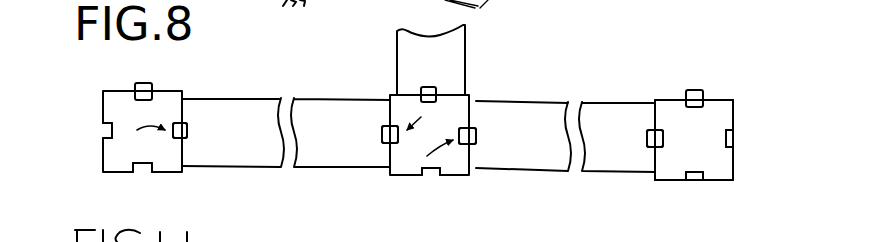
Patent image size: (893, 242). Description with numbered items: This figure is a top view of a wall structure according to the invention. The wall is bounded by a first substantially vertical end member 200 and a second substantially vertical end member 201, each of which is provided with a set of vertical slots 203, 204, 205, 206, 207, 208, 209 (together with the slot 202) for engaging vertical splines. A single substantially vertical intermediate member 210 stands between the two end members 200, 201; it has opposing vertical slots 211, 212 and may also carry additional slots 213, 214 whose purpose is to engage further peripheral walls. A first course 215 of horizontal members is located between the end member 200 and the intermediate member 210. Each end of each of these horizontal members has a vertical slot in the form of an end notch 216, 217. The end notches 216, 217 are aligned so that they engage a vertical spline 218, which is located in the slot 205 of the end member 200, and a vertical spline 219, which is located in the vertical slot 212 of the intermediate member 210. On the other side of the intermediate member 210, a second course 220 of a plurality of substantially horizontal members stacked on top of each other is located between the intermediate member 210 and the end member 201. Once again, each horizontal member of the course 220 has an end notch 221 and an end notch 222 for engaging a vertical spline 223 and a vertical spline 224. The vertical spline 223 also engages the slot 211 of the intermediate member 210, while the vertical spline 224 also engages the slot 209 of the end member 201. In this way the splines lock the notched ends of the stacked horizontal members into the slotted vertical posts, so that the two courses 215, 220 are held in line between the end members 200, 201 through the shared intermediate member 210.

The first end member 200 is at (167, 174).
The second end member 201 is at (718, 181).
The vertical slot 202 is at (140, 173).
The vertical slot 203 is at (110, 127).
The vertical slot 204 is at (150, 88).
The vertical slot 205 is at (187, 125).
The vertical slot 206 is at (731, 145).
The vertical slot 207 is at (700, 179).
The vertical slot 208 is at (703, 92).
The vertical slot 209 is at (653, 148).
The intermediate member 210 is at (455, 177).
The vertical slot 211 is at (474, 128).
The vertical slot 212 is at (388, 125).
The additional slot 213 is at (425, 177).
The additional slot 214 is at (436, 92).
The first course 215 is at (264, 138).
The end notch 216 is at (186, 134).
The end notch 217 is at (387, 144).
The vertical spline 218 is at (144, 143).
The vertical spline 219 is at (436, 120).
The second course 220 is at (553, 140).
The end notch 221 is at (470, 145).
The end notch 222 is at (652, 128).
The vertical spline 223 is at (425, 155).
The vertical spline 224 is at (694, 140).